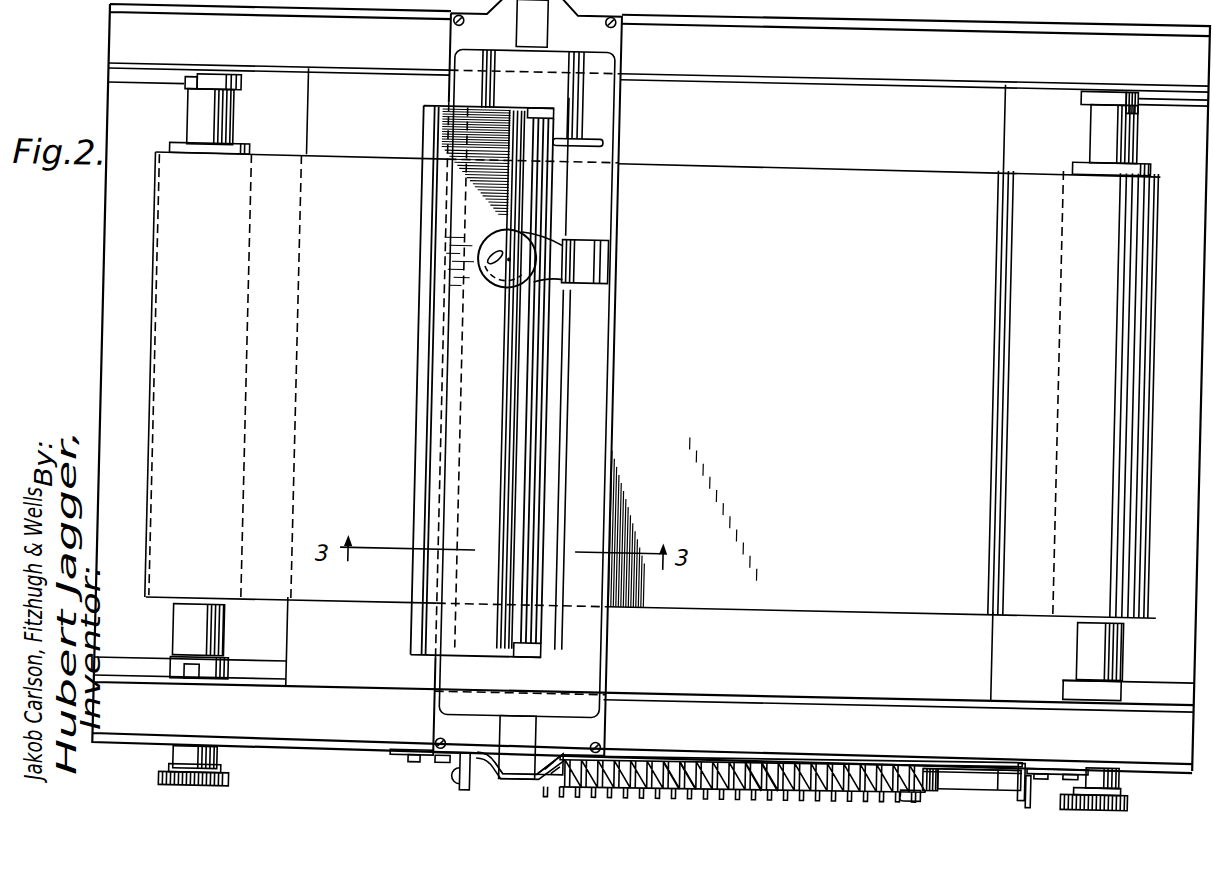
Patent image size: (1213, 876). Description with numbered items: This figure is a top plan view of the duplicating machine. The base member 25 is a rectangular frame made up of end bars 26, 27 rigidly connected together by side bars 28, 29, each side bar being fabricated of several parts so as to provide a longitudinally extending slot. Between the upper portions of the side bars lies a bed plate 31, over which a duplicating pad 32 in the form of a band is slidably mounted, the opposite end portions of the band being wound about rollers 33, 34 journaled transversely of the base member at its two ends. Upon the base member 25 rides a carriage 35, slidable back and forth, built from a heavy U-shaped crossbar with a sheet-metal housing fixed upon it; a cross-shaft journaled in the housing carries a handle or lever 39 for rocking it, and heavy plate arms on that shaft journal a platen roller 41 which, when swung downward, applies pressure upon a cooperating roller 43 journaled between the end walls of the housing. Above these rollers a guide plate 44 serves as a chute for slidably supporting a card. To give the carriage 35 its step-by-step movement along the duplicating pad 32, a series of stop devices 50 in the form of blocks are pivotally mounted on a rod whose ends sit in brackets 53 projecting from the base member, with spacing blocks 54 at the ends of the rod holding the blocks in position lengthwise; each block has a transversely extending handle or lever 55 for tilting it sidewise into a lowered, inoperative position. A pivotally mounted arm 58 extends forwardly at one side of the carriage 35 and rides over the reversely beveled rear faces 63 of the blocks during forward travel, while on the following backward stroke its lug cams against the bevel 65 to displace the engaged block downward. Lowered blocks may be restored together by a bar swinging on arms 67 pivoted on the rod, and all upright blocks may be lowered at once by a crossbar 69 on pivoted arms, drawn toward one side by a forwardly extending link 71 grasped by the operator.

The base member 25 is at (104, 94).
The end bar 26 is at (122, 242).
The end bar 27 is at (1163, 114).
The side bar 28 is at (790, 57).
The side bar 29 is at (757, 679).
The bed plate 31 is at (912, 78).
The duplicating pad 32 is at (749, 160).
The roller 33 is at (243, 144).
The roller 34 is at (1140, 150).
The carriage 35 is at (624, 428).
The handle or lever 39 is at (581, 240).
The platen roller 41 is at (550, 526).
The cooperating roller 43 is at (526, 577).
The guide plate 44 is at (428, 397).
The stop devices 50 is at (823, 757).
The brackets 53 is at (504, 745).
The spacing blocks 54 is at (516, 769).
The handle or lever 55 is at (939, 781).
The pivotally mounted arm 58 is at (575, 753).
The reverse bevel 63 is at (690, 758).
The reverse bevel 65 is at (787, 756).
The arms 67 is at (480, 779).
The crossbar 69 is at (979, 752).
The link 71 is at (1049, 778).